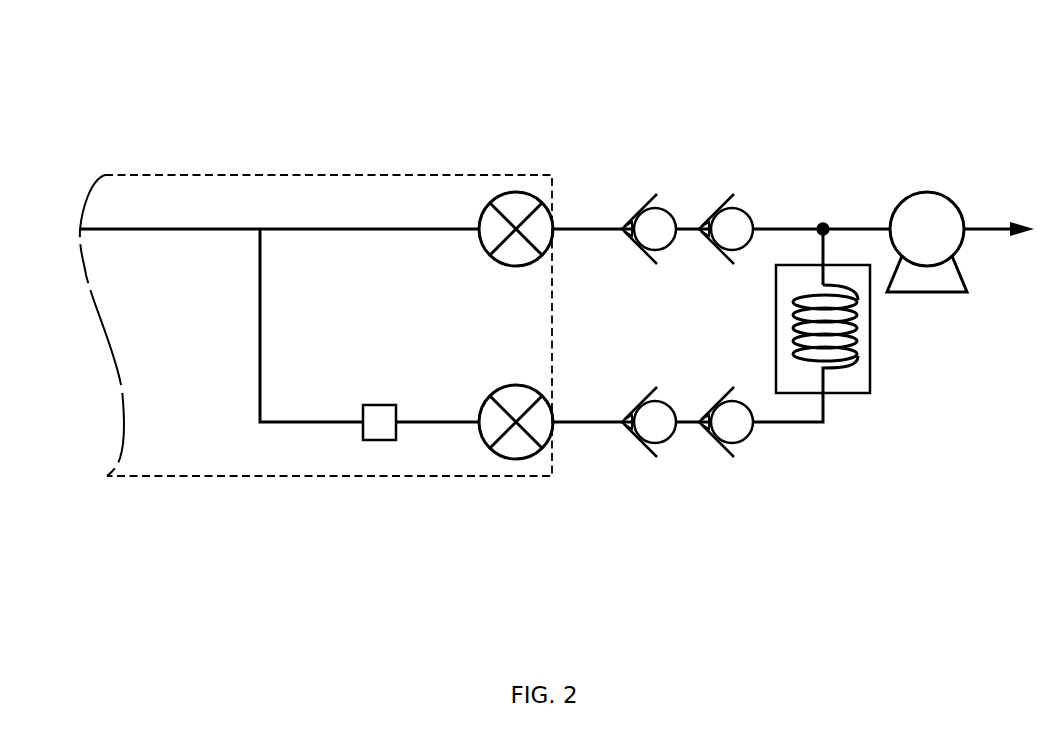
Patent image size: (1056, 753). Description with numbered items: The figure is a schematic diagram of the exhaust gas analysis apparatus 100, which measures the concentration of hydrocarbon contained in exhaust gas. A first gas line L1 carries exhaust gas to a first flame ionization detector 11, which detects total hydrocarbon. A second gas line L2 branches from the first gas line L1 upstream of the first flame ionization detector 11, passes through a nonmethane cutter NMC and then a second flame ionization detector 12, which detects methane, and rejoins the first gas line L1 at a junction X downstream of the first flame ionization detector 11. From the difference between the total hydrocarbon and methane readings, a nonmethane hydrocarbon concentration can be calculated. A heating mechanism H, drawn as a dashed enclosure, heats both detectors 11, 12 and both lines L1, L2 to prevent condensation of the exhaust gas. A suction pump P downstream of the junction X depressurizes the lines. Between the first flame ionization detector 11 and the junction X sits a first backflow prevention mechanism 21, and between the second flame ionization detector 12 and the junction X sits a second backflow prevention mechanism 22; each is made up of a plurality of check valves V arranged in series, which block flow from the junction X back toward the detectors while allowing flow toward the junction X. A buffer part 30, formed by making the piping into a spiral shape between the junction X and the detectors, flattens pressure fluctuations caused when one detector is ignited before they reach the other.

The exhaust gas analysis apparatus 100 is at (158, 66).
The heating mechanism H is at (328, 175).
The first gas line L1 is at (190, 228).
The second gas line L2 is at (288, 425).
The nonmethane cutter NMC is at (378, 442).
The first flame ionization detector 11 is at (516, 192).
The second flame ionization detector 12 is at (517, 459).
The check valve V is at (670, 207).
The first backflow prevention mechanism 21 is at (647, 136).
The second backflow prevention mechanism 22 is at (647, 515).
The junction X is at (835, 211).
The buffer part 30 is at (870, 370).
The suction pump P is at (925, 295).